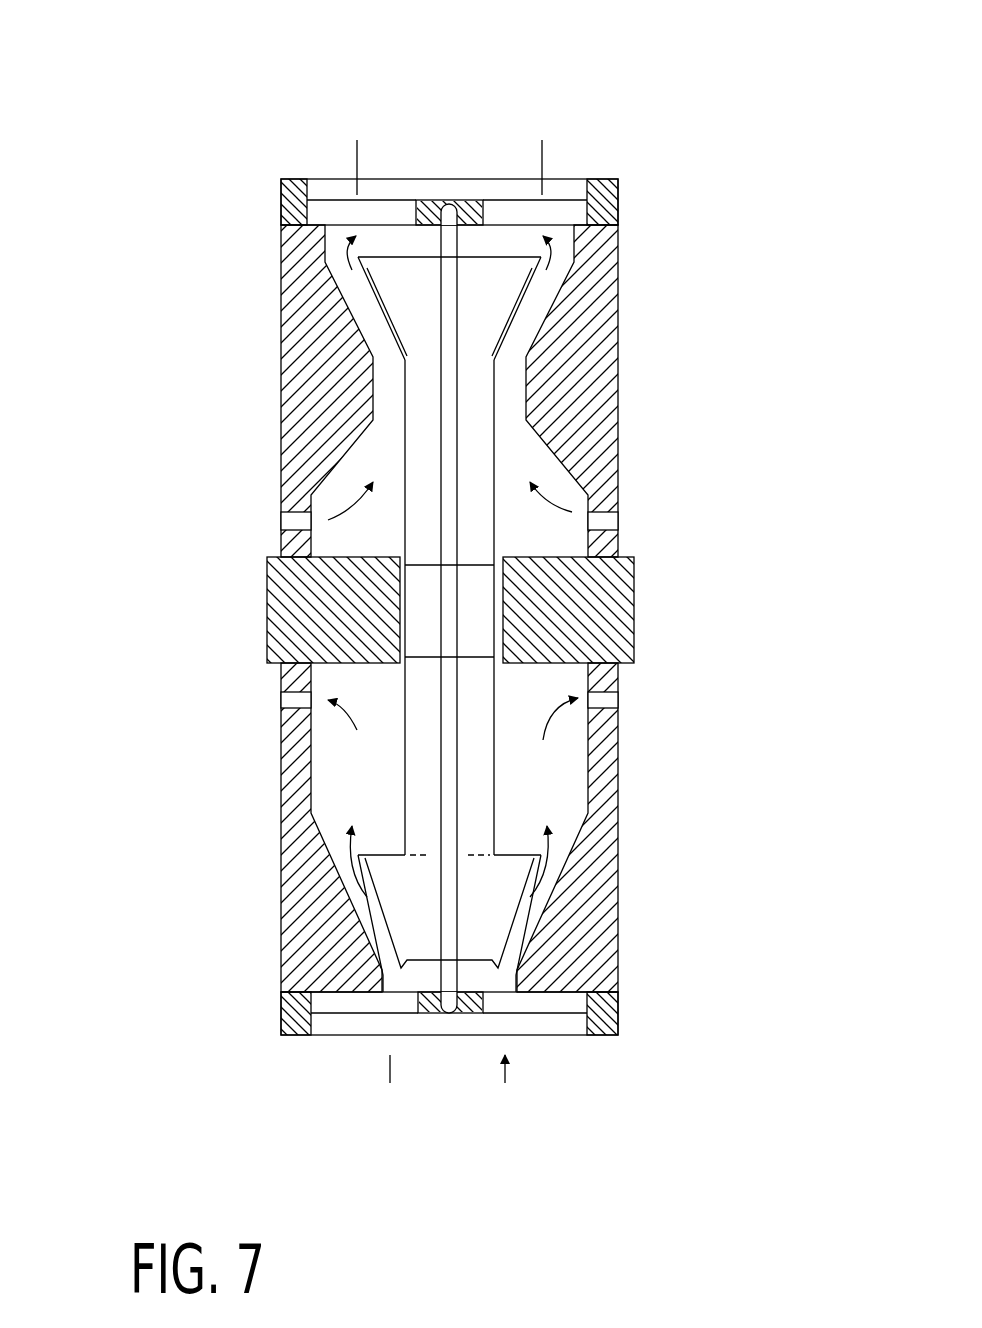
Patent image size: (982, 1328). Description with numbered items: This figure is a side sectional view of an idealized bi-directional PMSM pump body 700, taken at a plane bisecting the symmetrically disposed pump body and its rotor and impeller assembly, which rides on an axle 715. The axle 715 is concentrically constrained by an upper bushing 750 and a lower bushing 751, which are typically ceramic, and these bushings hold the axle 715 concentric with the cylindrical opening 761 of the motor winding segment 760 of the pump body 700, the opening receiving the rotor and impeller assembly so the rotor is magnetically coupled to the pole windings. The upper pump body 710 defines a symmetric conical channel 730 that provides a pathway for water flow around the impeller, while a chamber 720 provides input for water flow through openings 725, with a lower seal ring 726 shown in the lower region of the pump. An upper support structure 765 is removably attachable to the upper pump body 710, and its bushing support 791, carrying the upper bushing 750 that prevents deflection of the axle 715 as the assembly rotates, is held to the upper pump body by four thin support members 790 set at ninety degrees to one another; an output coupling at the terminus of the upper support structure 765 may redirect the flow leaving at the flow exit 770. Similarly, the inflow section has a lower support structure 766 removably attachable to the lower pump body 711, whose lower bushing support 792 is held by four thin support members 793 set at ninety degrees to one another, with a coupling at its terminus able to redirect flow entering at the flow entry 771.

The pump body 700 is at (658, 415).
The upper pump body 710 is at (605, 368).
The lower pump body 711 is at (620, 785).
The axle 715 is at (453, 722).
The chamber 720 is at (370, 455).
The openings 725 is at (290, 523).
The lower seal ring 726 is at (283, 702).
The symmetric conical channel 730 is at (365, 305).
The upper bushing 750 is at (463, 207).
The lower bushing 751 is at (467, 1013).
The motor winding segment 760 is at (628, 612).
The cylindrical opening 761 is at (405, 578).
The upper support structure 765 is at (613, 203).
The lower support structure 766 is at (622, 1000).
The flow exit 770 is at (560, 185).
The flow entry 771 is at (572, 1025).
The thin support members 790 is at (330, 205).
The bushing support 791 is at (430, 205).
The lower bushing support 792 is at (455, 1012).
The thin support members 793 is at (357, 1000).